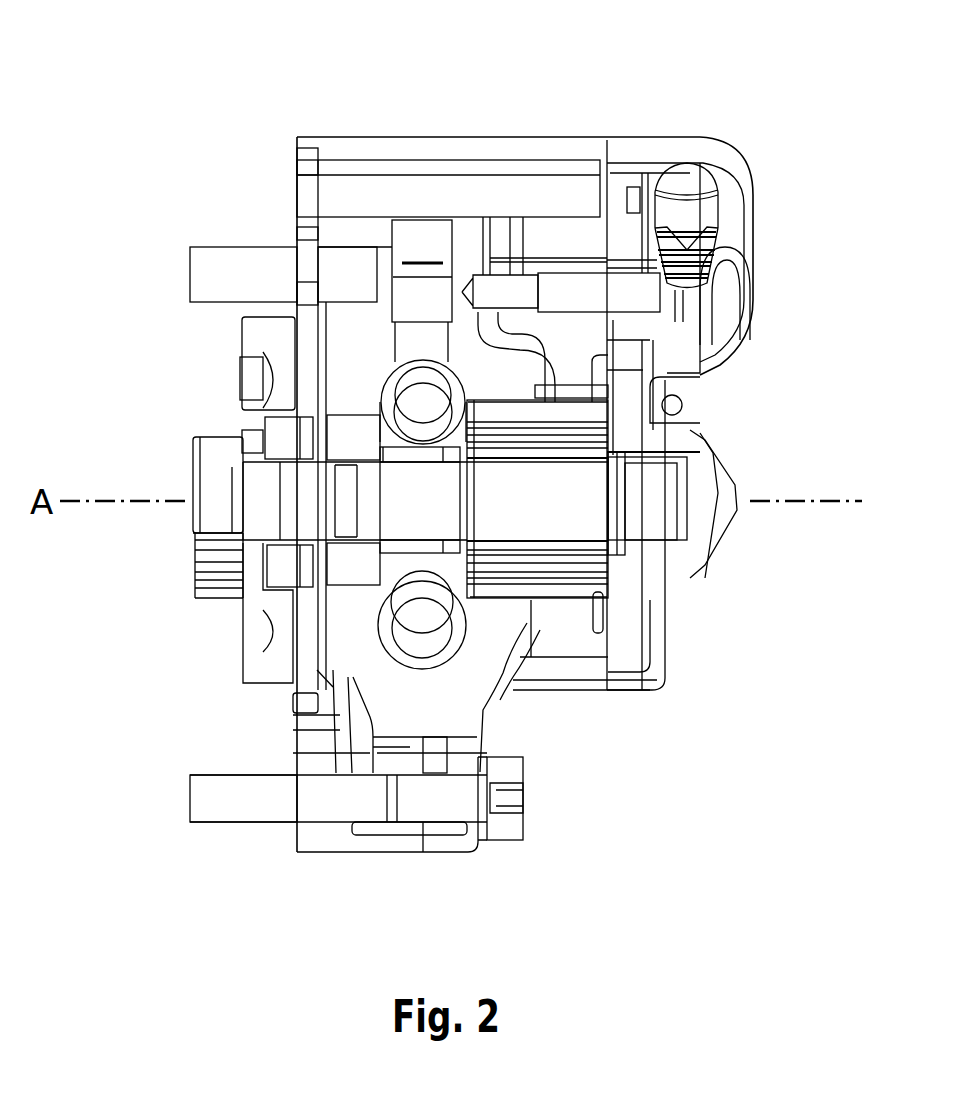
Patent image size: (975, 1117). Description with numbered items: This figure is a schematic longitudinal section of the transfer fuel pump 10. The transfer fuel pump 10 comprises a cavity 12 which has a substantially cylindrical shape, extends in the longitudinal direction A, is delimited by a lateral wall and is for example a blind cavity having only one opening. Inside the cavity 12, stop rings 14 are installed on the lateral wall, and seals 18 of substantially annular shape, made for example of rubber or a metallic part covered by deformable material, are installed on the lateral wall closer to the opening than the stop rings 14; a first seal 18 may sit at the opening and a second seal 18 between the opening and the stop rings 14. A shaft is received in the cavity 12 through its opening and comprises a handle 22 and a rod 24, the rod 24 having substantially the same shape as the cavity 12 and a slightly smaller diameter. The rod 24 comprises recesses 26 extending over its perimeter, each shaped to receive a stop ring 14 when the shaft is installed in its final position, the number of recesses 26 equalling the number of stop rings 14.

The transfer fuel pump 10 is at (186, 99).
The cavity 12 is at (405, 452).
The stop ring 14 is at (467, 460).
The seal 18 is at (283, 428).
The handle 22 is at (213, 477).
The rod 24 is at (293, 520).
The recess 26 is at (608, 523).